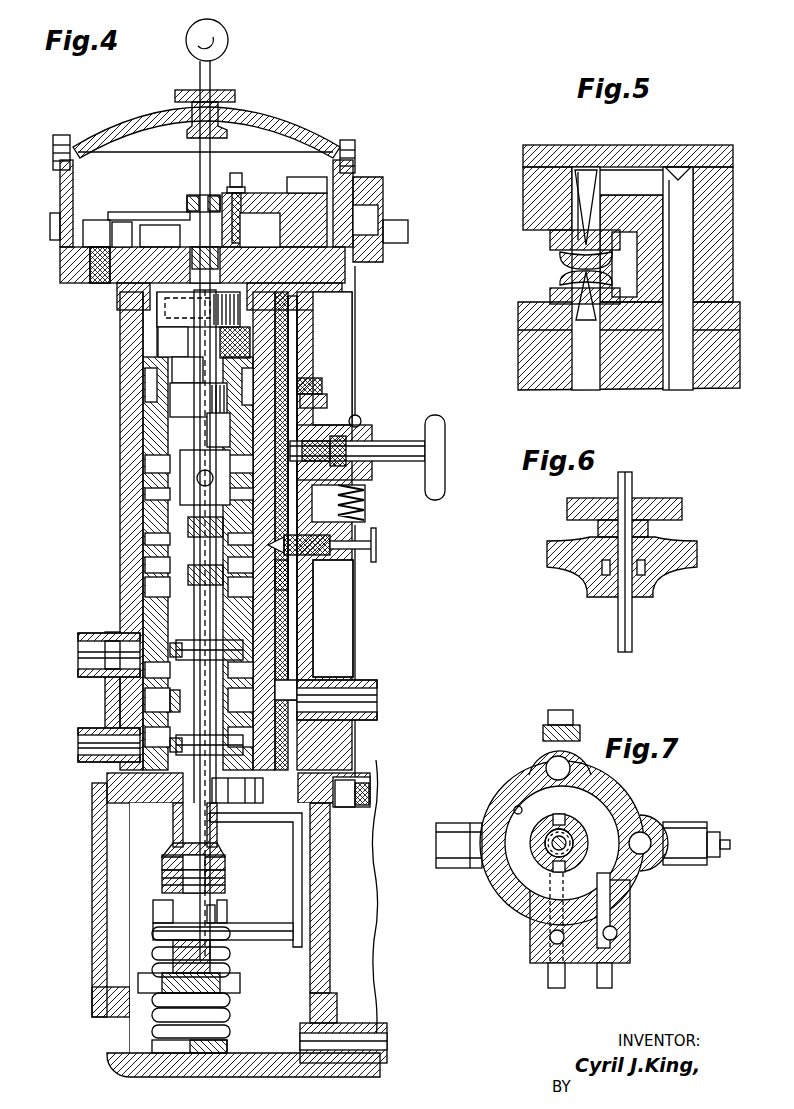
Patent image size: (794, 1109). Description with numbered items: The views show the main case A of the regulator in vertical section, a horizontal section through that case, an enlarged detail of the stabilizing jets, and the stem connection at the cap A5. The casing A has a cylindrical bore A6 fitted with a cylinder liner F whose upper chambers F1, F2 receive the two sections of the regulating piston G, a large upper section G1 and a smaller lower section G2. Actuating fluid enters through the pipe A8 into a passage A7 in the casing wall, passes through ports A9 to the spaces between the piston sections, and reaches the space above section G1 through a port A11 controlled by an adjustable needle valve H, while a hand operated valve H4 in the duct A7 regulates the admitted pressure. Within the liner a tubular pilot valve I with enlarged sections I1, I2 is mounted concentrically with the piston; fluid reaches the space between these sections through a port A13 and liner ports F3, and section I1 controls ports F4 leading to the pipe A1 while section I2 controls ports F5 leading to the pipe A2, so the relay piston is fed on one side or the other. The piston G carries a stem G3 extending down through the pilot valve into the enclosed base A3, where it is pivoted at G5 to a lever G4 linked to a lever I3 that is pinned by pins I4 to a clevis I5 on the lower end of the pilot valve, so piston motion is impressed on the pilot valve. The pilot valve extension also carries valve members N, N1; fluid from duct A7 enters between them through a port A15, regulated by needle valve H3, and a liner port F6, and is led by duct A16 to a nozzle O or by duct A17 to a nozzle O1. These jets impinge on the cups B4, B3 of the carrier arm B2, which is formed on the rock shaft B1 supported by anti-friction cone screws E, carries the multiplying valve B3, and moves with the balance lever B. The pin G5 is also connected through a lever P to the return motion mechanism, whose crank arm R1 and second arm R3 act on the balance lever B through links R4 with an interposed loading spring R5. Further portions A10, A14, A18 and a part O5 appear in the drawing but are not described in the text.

In FIG. 7, the main case A is at (508, 780).
In FIG. 4, the pipe A1 is at (85, 652).
In FIG. 7, the pipe A1 is at (448, 852).
In FIG. 4, the pipe A2 is at (85, 745).
In FIG. 4, the enclosed base A3 is at (250, 1077).
In FIG. 4, the cap A5 is at (298, 140).
In FIG. 6, the cap A5 is at (680, 555).
In FIG. 7, the cylindrical bore A6 is at (514, 810).
In FIG. 4, the passage A7 is at (294, 608).
In FIG. 7, the passage A7 is at (645, 838).
In FIG. 4, the pipe A8 is at (360, 690).
In FIG. 4, the port A9 is at (306, 402).
In FIG. 4, the plug A10 is at (305, 386).
In FIG. 4, the port A11 is at (262, 215).
In FIG. 4, the port A13 is at (285, 685).
In FIG. 4, the lower casing wall A14 is at (330, 955).
In FIG. 4, the port A15 is at (353, 580).
In FIG. 5, the duct A16 is at (590, 392).
In FIG. 7, the duct A16 is at (550, 937).
In FIG. 5, the duct A17 is at (682, 392).
In FIG. 7, the duct A17 is at (607, 920).
In FIG. 7, the bolt hole A18 is at (552, 760).
In FIG. 4, the balance lever B is at (372, 255).
In FIG. 4, the rock shaft B1 is at (120, 228).
In FIG. 4, the carrier arm B2 is at (188, 198).
In FIG. 5, the multiplying valve B3 is at (560, 256).
In FIG. 5, the cup B4 is at (560, 281).
In FIG. 4, the anti-friction cone screws E is at (50, 224).
In FIG. 4, the cylinder liner F is at (148, 440).
In FIG. 4, the chamber F1 is at (235, 342).
In FIG. 4, the chamber F2 is at (218, 430).
In FIG. 4, the ports F3 is at (170, 700).
In FIG. 4, the ports F4 is at (170, 648).
In FIG. 4, the ports F5 is at (170, 745).
In FIG. 4, the port F6 is at (288, 572).
In FIG. 4, the regulating piston G is at (185, 345).
In FIG. 4, the upper piston section G1 is at (160, 312).
In FIG. 4, the lower piston section G2 is at (185, 395).
In FIG. 4, the stem G3 is at (200, 470).
In FIG. 7, the stem G3 is at (578, 825).
In FIG. 4, the lever G4 is at (231, 1002).
In FIG. 4, the pivotal connection G5 is at (240, 978).
In FIG. 4, the needle valve H is at (240, 172).
In FIG. 4, the needle valve H3 is at (378, 541).
In FIG. 7, the needle valve H3 is at (728, 850).
In FIG. 4, the hand operated valve H4 is at (298, 452).
In FIG. 4, the pilot valve I is at (194, 590).
In FIG. 7, the pilot valve I is at (568, 850).
In FIG. 4, the valve section I1 is at (209, 647).
In FIG. 4, the valve section I2 is at (209, 742).
In FIG. 4, the lever I3 is at (222, 855).
In FIG. 4, the pins I4 is at (226, 880).
In FIG. 4, the clevis I5 is at (170, 840).
In FIG. 4, the valve member N is at (188, 574).
In FIG. 4, the valve member N1 is at (188, 527).
In FIG. 7, the valve member N1 is at (540, 866).
In FIG. 4, the nozzle O is at (231, 1030).
In FIG. 5, the nozzle O is at (550, 296).
In FIG. 4, the nozzle O1 is at (230, 952).
In FIG. 5, the nozzle O1 is at (550, 238).
In FIG. 4, the plate O5 is at (295, 918).
In FIG. 4, the lever P is at (173, 960).
In FIG. 4, the crank arm R1 is at (264, 790).
In FIG. 4, the second arm R3 is at (369, 796).
In FIG. 4, the links R4 is at (357, 304).
In FIG. 4, the loading spring R5 is at (365, 505).